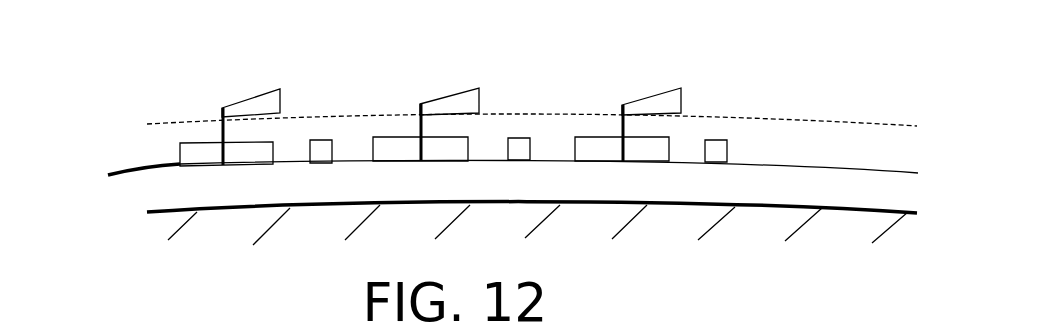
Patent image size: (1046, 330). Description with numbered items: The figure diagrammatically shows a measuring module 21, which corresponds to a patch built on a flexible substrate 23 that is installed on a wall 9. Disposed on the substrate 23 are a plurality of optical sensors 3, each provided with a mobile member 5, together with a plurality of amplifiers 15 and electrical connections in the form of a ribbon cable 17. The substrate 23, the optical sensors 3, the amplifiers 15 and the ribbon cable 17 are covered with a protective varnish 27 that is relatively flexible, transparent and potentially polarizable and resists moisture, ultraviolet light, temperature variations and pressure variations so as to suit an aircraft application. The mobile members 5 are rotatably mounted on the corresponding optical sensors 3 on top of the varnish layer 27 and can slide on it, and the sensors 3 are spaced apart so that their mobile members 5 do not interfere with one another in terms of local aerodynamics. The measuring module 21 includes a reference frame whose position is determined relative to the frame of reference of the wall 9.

The optical sensor 3 is at (262, 140).
The mobile member 5 is at (248, 97).
The wall 9 is at (678, 205).
The amplifier 15 is at (321, 146).
The ribbon cable 17 is at (130, 167).
The measuring module 21 is at (122, 113).
The substrate 23 is at (157, 189).
The protective varnish 27 is at (810, 140).